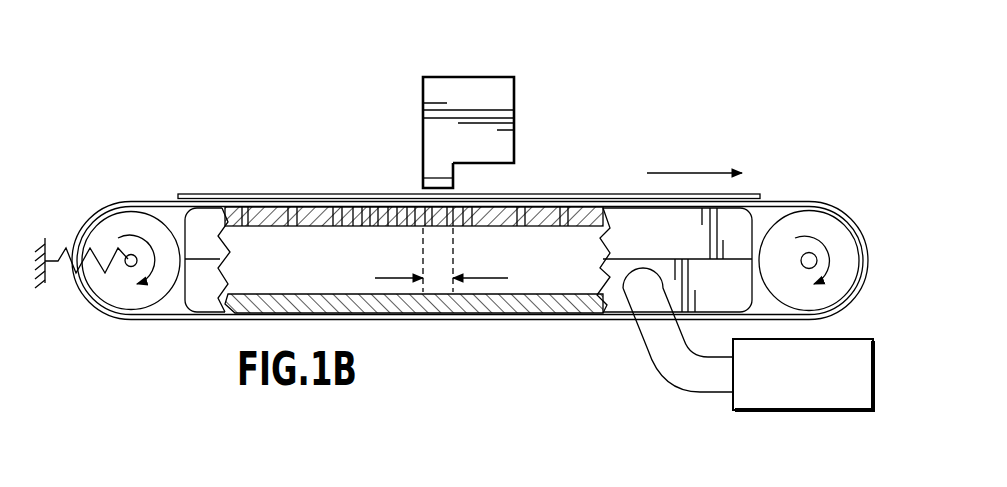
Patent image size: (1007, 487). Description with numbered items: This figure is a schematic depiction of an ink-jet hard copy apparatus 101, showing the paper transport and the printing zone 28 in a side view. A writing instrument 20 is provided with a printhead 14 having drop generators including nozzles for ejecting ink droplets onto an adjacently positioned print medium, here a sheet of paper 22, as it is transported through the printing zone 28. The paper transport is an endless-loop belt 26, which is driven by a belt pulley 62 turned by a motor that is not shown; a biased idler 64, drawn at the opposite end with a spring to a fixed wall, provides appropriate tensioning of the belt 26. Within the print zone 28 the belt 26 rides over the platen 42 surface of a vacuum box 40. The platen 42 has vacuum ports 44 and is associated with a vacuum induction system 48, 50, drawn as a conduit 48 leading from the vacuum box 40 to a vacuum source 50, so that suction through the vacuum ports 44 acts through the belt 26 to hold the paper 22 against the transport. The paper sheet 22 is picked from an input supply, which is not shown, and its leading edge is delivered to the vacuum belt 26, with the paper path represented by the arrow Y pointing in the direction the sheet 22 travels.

The ink-jet hard copy apparatus 101 is at (158, 108).
The printhead 14 is at (423, 165).
The writing instrument 20 is at (471, 88).
The sheet of paper 22 is at (605, 193).
The endless-loop belt 26 is at (782, 201).
The printing zone 28 is at (402, 278).
The vacuum box 40 is at (182, 222).
The platen 42 is at (487, 227).
The vacuum ports 44 is at (243, 209).
The vacuum induction system 48 is at (693, 395).
The vacuum induction system 50 is at (838, 412).
The belt pulley 62 is at (828, 220).
The biased idler 64 is at (127, 300).
The paper path arrow Y is at (694, 173).